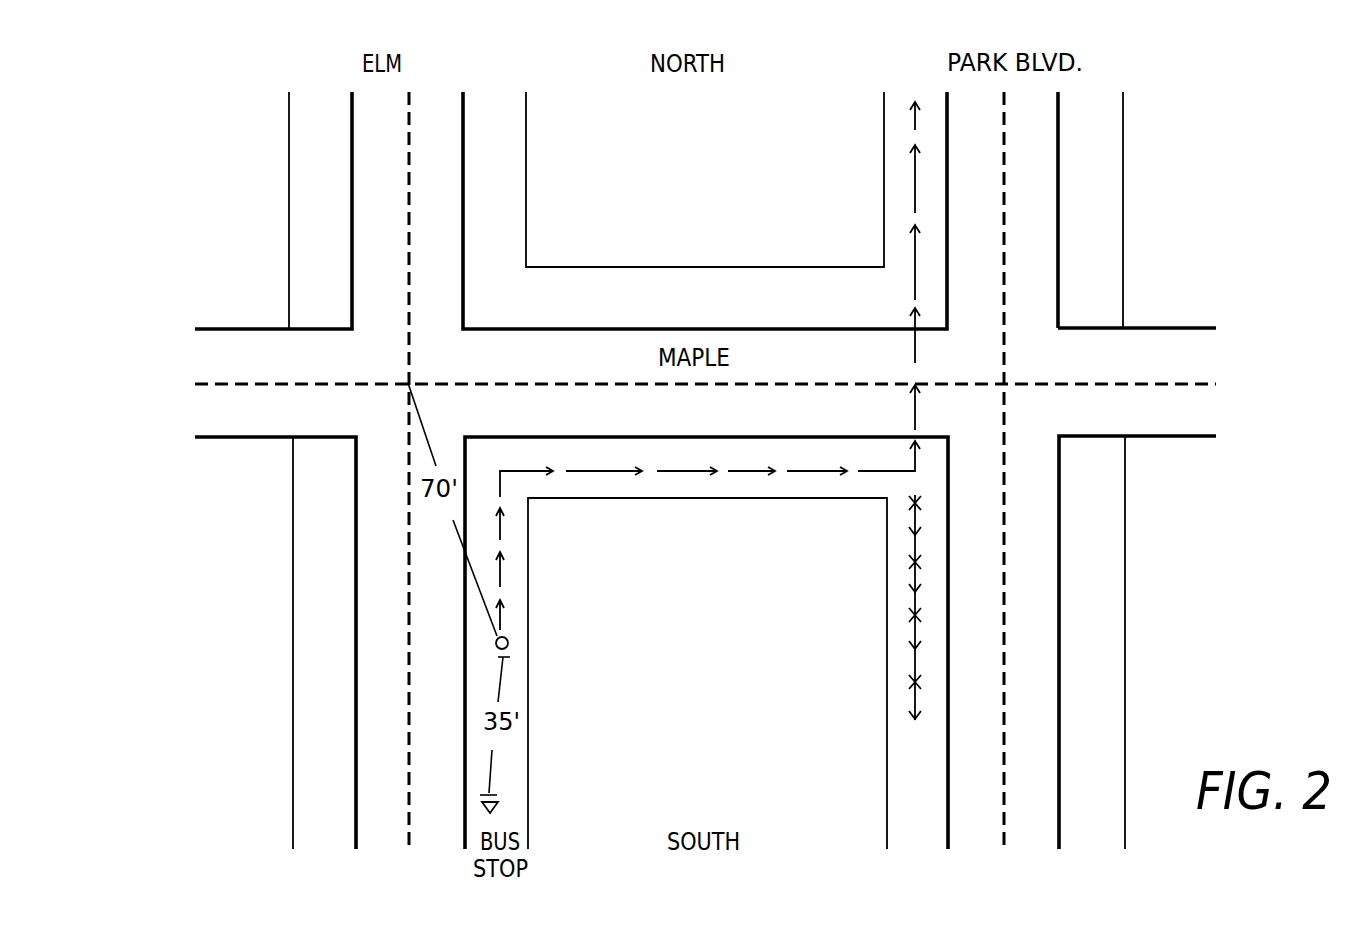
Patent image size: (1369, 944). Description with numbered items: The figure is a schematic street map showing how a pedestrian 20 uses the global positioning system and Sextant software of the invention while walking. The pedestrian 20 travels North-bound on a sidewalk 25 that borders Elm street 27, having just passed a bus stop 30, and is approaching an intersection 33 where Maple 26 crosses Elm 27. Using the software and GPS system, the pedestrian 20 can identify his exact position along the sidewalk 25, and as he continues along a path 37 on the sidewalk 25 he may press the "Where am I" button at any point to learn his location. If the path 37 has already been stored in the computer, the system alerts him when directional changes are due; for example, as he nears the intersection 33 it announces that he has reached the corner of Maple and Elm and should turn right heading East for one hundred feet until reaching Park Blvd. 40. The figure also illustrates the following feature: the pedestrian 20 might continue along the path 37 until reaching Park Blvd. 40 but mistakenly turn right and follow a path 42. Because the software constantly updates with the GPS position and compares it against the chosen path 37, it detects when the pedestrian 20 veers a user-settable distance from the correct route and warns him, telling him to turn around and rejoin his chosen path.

The pedestrian 20 is at (508, 637).
The sidewalk 25 is at (517, 673).
The Maple 26 is at (1168, 338).
The Elm street 27 is at (380, 827).
The bus stop 30 is at (499, 810).
The intersection 33 is at (402, 390).
The path 37 is at (610, 472).
The Park Blvd. 40 is at (1042, 125).
The path 42 is at (915, 519).